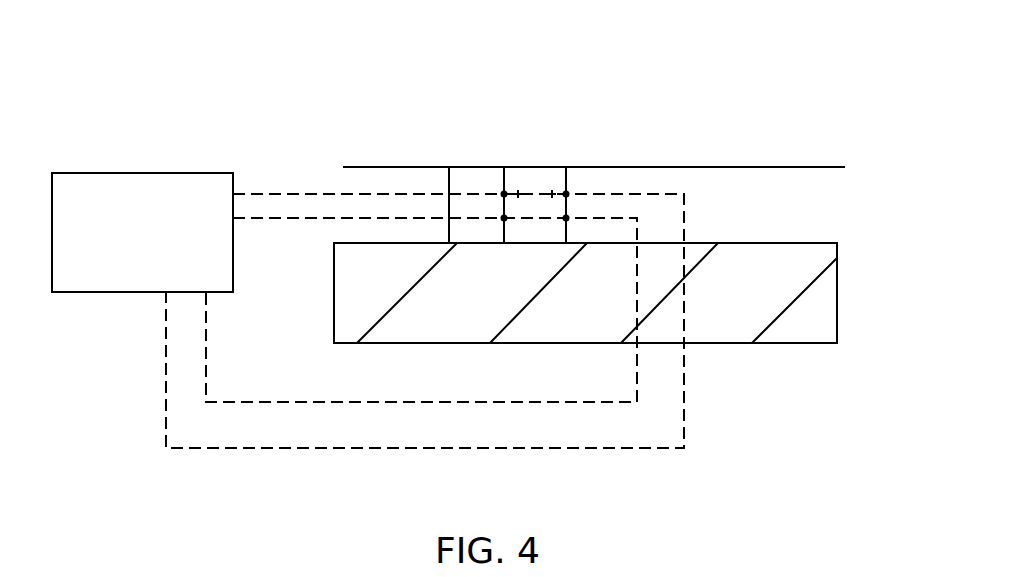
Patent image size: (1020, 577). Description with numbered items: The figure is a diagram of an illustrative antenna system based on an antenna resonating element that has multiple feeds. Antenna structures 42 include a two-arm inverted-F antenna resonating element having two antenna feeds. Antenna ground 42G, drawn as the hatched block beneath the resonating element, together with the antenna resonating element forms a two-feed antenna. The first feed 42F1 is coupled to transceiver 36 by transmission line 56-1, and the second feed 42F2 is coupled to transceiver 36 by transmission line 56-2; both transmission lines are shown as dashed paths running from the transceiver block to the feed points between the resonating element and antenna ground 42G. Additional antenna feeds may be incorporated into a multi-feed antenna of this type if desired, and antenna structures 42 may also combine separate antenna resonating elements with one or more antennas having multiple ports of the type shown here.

The transceiver 36 is at (109, 292).
The antenna structures 42 is at (594, 142).
The feed 42F1 is at (490, 229).
The feed 42F2 is at (584, 229).
The antenna ground 42G is at (818, 292).
The transmission line 56-1 is at (288, 176).
The transmission line 56-2 is at (243, 462).